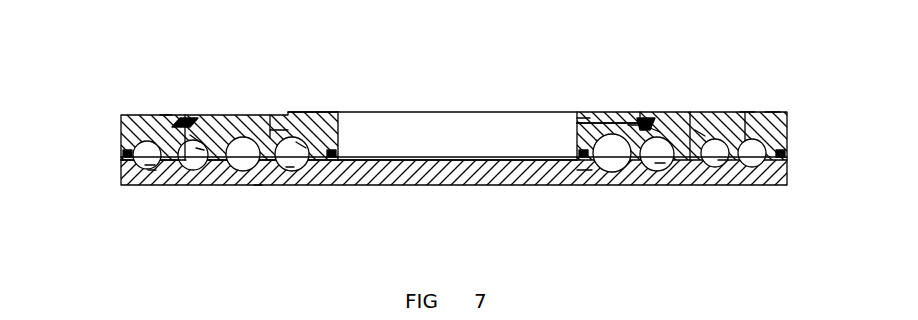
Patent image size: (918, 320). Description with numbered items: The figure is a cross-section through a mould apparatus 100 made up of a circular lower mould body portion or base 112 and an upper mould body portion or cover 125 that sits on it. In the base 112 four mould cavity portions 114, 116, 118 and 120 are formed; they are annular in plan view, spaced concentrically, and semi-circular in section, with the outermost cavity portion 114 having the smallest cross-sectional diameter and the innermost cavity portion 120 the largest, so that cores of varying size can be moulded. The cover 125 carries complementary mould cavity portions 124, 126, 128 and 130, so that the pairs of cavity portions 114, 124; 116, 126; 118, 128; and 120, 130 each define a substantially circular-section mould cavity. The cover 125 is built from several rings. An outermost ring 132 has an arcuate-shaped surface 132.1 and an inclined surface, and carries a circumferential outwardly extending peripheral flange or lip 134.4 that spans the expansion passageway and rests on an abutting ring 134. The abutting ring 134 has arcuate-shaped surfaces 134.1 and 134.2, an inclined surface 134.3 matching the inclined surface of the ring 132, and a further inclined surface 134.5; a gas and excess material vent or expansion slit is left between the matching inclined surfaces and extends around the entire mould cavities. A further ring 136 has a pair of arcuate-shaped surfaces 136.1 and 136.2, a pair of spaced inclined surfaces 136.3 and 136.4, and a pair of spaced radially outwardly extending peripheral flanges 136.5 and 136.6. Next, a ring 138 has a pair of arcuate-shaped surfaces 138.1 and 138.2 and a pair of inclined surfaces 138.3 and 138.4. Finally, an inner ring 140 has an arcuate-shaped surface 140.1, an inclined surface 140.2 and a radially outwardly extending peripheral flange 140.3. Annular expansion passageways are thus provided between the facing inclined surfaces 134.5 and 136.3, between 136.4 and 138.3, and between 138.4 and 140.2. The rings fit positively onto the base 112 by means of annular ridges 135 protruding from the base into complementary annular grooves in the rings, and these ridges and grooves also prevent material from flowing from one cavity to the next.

The mould apparatus 100 is at (686, 36).
The lower mould body portion or base 112 is at (455, 175).
The mould cavity portion 114 is at (152, 182).
The mould cavity portion 116 is at (194, 170).
The mould cavity portion 118 is at (240, 170).
The mould cavity portion 120 is at (310, 168).
The mould cavity portion 124 is at (140, 151).
The upper mould body portion or cover 125 is at (302, 112).
The mould cavity portion 126 is at (198, 150).
The mould cavity portion 128 is at (240, 147).
The mould cavity portion 130 is at (302, 145).
The outermost ring 132 is at (120, 122).
The arcuate-shaped surface 132.1 is at (150, 165).
The abutting ring 134 is at (153, 130).
The arcuate-shaped surface 134.1 is at (155, 172).
The arcuate-shaped surface 134.2 is at (180, 162).
The inclined surface 134.3 is at (167, 123).
The peripheral flange or lip 134.4 is at (162, 113).
The inclined surface 134.5 is at (197, 138).
The annular ridges 135 is at (123, 151).
The further ring 136 is at (688, 130).
The arcuate-shaped surface 136.1 is at (723, 162).
The arcuate-shaped surface 136.2 is at (660, 165).
The inclined surface 136.3 is at (772, 110).
The inclined surface 136.4 is at (700, 132).
The peripheral flange 136.5 is at (747, 110).
The peripheral flange 136.6 is at (656, 130).
The ring 138 is at (265, 126).
The arcuate-shaped surface 138.1 is at (258, 188).
The arcuate-shaped surface 138.2 is at (290, 167).
The inclined surface 138.3 is at (641, 128).
The inclined surface 138.4 is at (634, 130).
The inner ring 140 is at (580, 110).
The arcuate-shaped surface 140.1 is at (578, 176).
The inclined surface 140.2 is at (575, 122).
The peripheral flange 140.3 is at (600, 88).